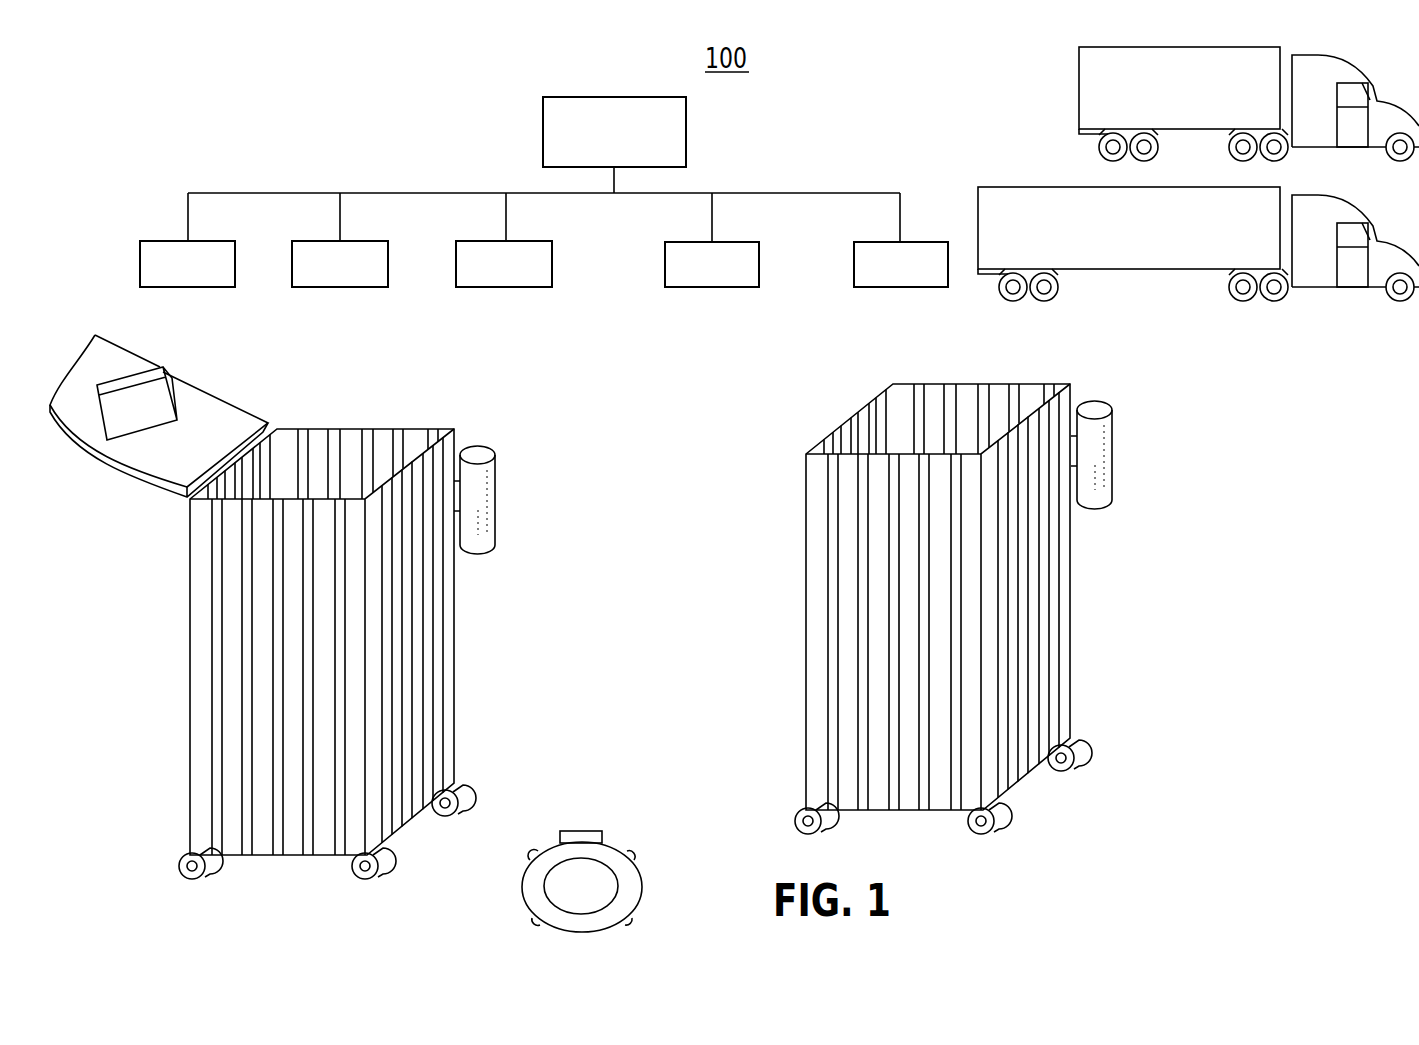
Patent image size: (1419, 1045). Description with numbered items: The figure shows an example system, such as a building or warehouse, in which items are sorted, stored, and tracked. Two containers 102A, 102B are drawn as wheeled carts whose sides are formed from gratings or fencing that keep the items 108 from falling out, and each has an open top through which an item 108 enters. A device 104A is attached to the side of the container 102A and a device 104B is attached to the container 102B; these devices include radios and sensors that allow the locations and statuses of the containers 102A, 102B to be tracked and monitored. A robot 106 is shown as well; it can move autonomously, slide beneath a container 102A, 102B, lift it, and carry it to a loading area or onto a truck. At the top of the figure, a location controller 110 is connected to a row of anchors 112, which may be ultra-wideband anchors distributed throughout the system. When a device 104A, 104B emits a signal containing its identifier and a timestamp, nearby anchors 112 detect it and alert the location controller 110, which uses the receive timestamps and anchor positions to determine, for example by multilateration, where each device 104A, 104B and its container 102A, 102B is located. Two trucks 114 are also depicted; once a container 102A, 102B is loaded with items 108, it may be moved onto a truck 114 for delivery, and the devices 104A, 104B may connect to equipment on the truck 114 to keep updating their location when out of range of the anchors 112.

The container 102A is at (454, 717).
The container 102B is at (1070, 672).
The device 104A is at (498, 497).
The device 104B is at (1114, 455).
The robot 106 is at (578, 831).
The item 108 is at (173, 400).
The location controller 110 is at (543, 130).
The anchor 112 is at (157, 241).
The truck 114 is at (1079, 96).